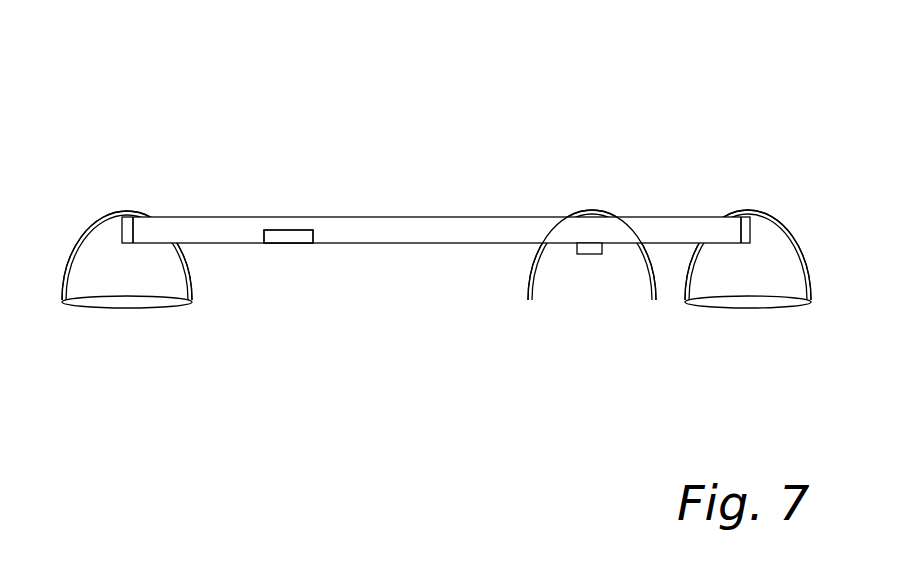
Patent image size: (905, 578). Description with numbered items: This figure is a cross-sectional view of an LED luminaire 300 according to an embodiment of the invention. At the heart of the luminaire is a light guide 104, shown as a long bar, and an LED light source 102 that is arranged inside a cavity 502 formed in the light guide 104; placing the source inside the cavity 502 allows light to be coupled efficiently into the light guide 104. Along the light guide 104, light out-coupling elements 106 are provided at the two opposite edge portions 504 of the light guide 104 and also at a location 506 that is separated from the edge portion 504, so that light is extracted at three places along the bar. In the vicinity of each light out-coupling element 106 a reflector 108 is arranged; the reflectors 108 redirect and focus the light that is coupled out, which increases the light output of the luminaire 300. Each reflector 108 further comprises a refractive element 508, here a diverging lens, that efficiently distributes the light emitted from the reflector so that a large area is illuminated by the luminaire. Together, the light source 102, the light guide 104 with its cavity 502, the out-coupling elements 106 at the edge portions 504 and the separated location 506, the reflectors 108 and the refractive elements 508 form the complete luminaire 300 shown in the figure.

The lighting system 300 is at (692, 85).
The LED light source 102 is at (291, 240).
The light guide 104 is at (362, 227).
The light out-coupling elements 106 is at (110, 228).
The reflectors 108 is at (587, 210).
The cavity 502 is at (316, 237).
The edge portions 504 is at (133, 220).
The location 506 is at (607, 244).
The refractive element 508 is at (163, 310).